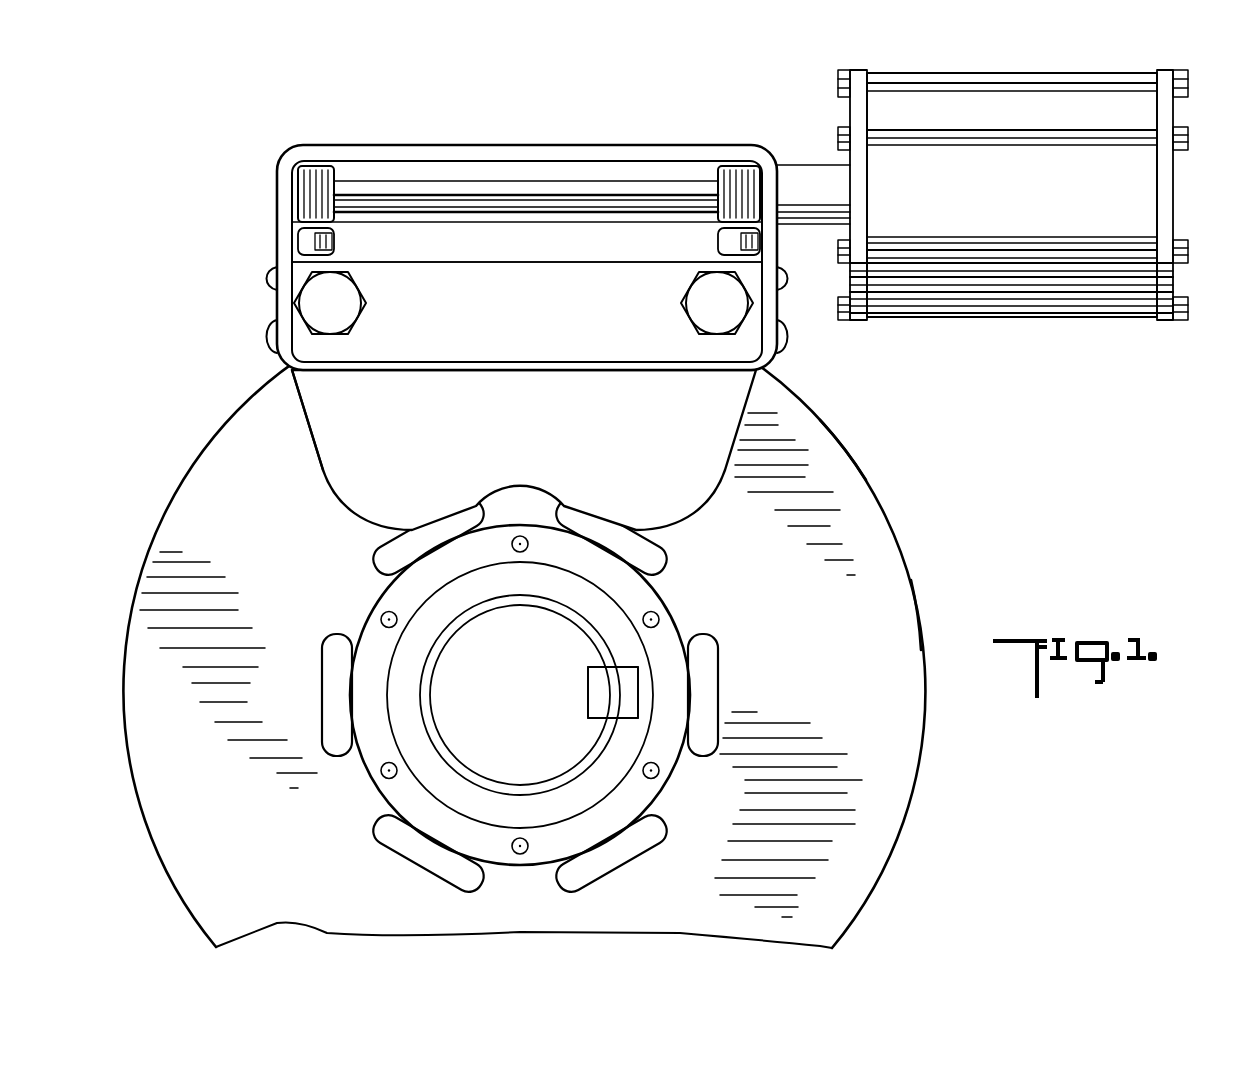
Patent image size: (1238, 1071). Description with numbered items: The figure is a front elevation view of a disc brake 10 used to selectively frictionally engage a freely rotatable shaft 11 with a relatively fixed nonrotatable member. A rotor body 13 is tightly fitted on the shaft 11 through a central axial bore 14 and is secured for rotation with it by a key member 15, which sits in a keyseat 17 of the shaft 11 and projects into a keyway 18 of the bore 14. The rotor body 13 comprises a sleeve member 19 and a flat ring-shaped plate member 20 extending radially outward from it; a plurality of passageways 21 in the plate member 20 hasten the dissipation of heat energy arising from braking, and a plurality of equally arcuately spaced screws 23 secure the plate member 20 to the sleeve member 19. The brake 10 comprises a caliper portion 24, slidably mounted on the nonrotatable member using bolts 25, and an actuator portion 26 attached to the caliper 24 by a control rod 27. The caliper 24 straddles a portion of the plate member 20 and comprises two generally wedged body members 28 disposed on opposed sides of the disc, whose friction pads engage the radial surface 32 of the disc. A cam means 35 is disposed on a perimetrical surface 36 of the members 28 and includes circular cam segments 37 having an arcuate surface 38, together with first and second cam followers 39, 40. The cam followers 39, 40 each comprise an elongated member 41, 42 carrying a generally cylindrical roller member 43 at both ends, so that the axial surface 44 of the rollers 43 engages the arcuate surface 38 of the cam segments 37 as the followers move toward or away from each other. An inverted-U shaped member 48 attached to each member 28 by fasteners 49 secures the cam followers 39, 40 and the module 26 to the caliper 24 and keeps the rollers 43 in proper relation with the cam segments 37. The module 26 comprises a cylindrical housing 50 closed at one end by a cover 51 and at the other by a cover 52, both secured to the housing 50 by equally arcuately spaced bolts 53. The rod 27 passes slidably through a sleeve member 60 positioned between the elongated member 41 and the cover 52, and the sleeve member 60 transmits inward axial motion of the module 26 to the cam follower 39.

The brake 10 is at (220, 157).
The shaft 11 is at (510, 665).
The rotor body 13 is at (848, 447).
The bore 14 is at (450, 617).
The key member 15 is at (602, 704).
The keyseat 17 is at (587, 698).
The keyway 18 is at (638, 682).
The sleeve member 19 is at (602, 775).
The plate member 20 is at (895, 538).
The passageways 21 is at (395, 550).
The screws 23 is at (519, 536).
The caliper portion 24 is at (312, 473).
The bolts 25 is at (320, 305).
The actuator portion 26 is at (1028, 201).
The control rod 27 is at (565, 190).
The body members 28 is at (511, 421).
The radial surface 32 is at (888, 615).
The cam means 35 is at (415, 170).
The perimetrical surface 36 is at (545, 260).
The cam segments 37 is at (440, 220).
The arcuate surface 38 is at (423, 247).
The first cam follower 39 is at (740, 160).
The second cam follower 40 is at (312, 167).
The elongated member 41 is at (710, 170).
The elongated member 42 is at (307, 183).
The roller member 43 is at (332, 237).
The axial surface 44 is at (313, 237).
The member 48 is at (529, 153).
The fasteners 49 is at (270, 336).
The housing 50 is at (1001, 203).
The cover 51 is at (1168, 77).
The cover 52 is at (858, 77).
The bolts 53 is at (1047, 141).
The sleeve member 60 is at (803, 165).